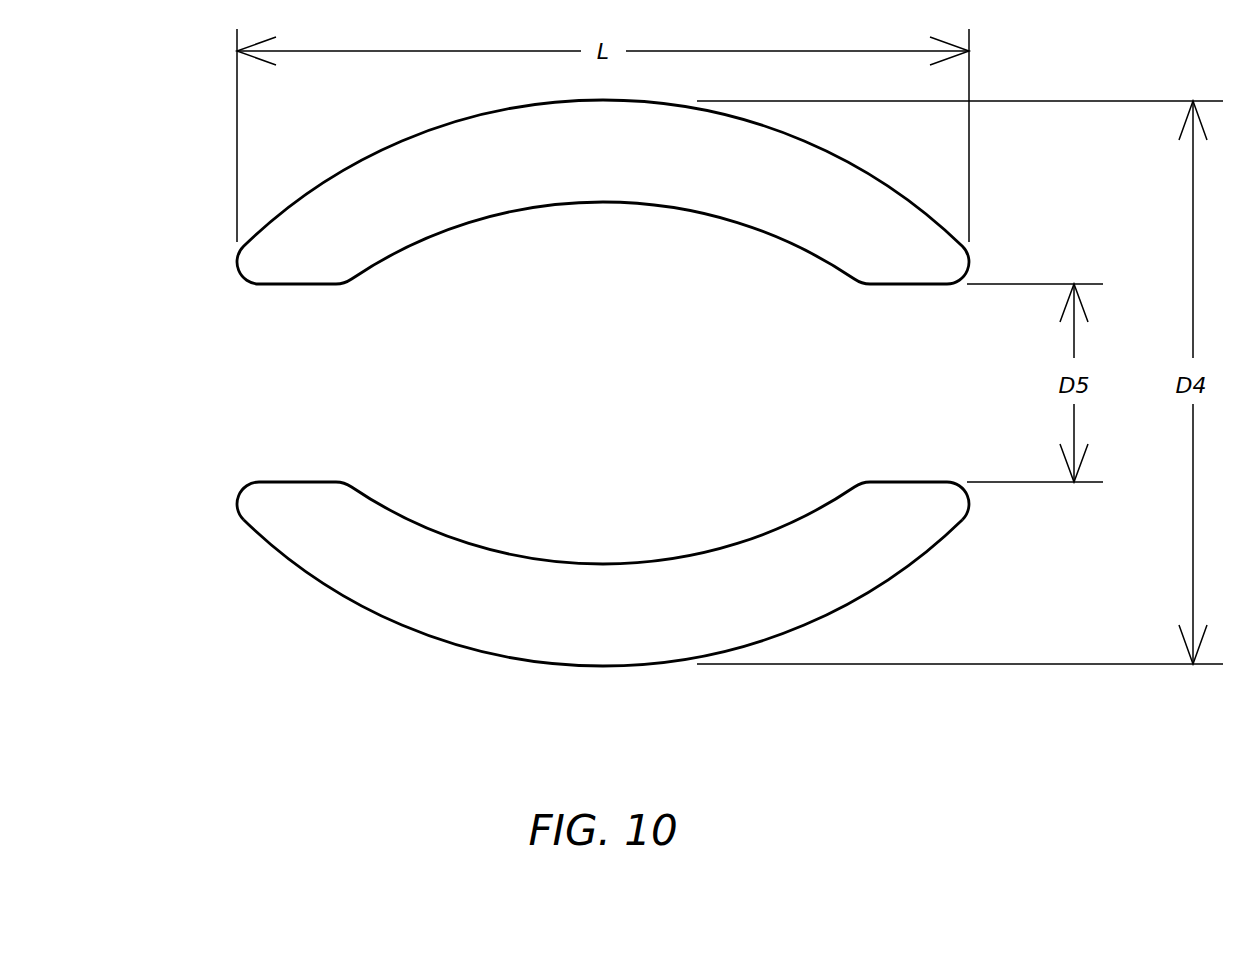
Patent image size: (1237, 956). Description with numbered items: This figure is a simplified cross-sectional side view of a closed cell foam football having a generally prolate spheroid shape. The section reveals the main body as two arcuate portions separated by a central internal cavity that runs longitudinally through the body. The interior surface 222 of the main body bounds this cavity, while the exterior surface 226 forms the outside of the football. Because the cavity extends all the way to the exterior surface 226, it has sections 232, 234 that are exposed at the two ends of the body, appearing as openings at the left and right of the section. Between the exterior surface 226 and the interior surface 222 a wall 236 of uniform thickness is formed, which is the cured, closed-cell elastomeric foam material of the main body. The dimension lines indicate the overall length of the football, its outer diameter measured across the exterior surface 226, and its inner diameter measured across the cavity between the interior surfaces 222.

The interior surface 222 is at (613, 431).
The exterior surface 226 is at (613, 622).
The exposed section of cavity 232 is at (293, 371).
The exposed section of cavity 234 is at (913, 372).
The wall 236 is at (578, 665).